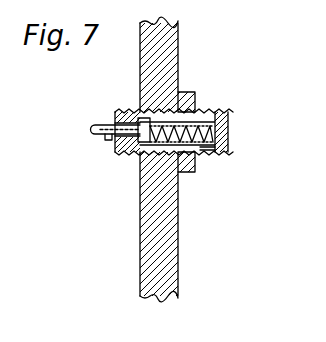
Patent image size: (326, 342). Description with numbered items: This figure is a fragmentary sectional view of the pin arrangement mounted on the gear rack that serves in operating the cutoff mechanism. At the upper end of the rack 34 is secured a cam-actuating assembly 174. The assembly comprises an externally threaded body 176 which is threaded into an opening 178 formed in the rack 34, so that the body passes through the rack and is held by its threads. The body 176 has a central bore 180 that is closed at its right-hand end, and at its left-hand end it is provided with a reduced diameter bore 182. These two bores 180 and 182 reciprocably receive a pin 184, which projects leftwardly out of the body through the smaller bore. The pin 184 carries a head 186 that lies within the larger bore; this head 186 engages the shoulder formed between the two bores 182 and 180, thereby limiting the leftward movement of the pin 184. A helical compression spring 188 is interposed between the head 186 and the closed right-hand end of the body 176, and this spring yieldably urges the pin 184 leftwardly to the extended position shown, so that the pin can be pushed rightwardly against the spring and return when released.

The rack 34 is at (168, 246).
The cam-actuating assembly 174 is at (200, 80).
The externally threaded body 176 is at (212, 150).
The opening 178 is at (140, 146).
The central bore 180 is at (229, 120).
The reduced diameter bore 182 is at (108, 140).
The pin 184 is at (102, 123).
The head 186 is at (140, 113).
The helical compression spring 188 is at (182, 92).